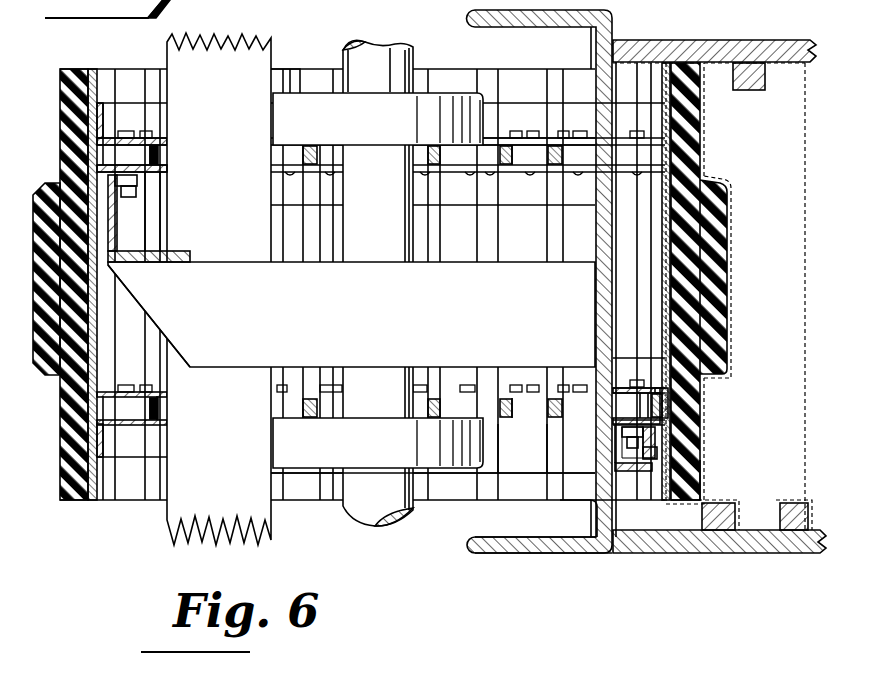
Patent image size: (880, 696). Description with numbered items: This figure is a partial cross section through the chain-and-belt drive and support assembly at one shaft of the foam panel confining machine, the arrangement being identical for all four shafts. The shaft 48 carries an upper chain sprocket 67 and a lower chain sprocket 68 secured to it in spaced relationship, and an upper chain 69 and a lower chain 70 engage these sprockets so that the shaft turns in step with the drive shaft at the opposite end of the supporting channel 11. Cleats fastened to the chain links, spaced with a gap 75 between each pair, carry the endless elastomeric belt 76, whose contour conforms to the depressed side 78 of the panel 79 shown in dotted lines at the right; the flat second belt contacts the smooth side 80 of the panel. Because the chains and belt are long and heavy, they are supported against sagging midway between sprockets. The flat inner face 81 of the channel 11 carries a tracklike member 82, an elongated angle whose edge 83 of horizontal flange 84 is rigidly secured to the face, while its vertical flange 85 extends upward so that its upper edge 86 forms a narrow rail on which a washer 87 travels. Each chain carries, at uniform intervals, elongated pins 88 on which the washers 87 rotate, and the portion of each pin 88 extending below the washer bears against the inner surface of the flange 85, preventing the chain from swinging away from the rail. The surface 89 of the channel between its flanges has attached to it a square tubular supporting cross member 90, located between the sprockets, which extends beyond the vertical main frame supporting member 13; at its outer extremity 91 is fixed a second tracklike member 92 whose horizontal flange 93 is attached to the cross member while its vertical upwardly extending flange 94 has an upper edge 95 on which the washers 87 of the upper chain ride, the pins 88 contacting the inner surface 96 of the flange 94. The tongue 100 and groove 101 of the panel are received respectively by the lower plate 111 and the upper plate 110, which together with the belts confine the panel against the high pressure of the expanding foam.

The supporting channel 11 is at (547, 555).
The vertical main frame supporting member 13 is at (234, 85).
The shaft 48 is at (405, 45).
The upper chain sprocket 67 is at (430, 153).
The lower chain sprocket 68 is at (413, 403).
The upper chain 69 is at (513, 133).
The lower chain 70 is at (517, 433).
The gap 75 is at (489, 478).
The belt 76 is at (692, 113).
The depressed side of panel 78 is at (703, 186).
The panel 79 is at (778, 88).
The smooth side of panel 80 is at (807, 105).
The flat inner face of channel 81 is at (617, 220).
The tracklike member 82 is at (630, 473).
The edge of horizontal flange 83 is at (597, 480).
The horizontal flange 84 is at (704, 478).
The vertical flange 85 is at (650, 458).
The upper edge 86 is at (650, 446).
The washer 87 is at (70, 157).
The elongated pin 88 is at (117, 178).
The surface of channel 89 is at (594, 246).
The supporting cross member 90 is at (382, 324).
The outer extremity of cross member 91 is at (145, 266).
The tracklike member 92 is at (171, 243).
The horizontal flange 93 is at (137, 249).
The vertical upwardly extending flange 94 is at (118, 215).
The upper edge 95 is at (113, 183).
The inner surface of flange 96 is at (45, 228).
The tongue 100 is at (755, 523).
The groove 101 is at (741, 92).
The upper plate 110 is at (692, 40).
The lower plate 111 is at (702, 531).